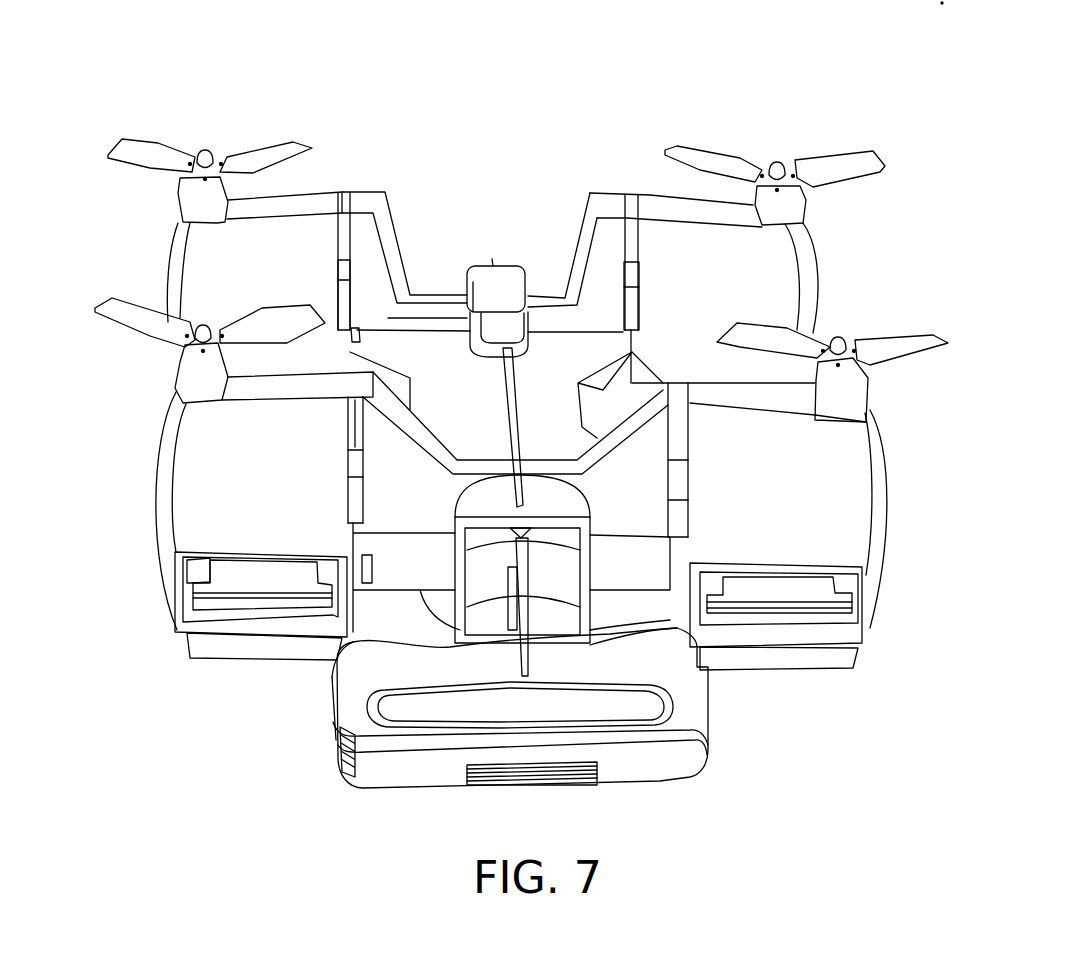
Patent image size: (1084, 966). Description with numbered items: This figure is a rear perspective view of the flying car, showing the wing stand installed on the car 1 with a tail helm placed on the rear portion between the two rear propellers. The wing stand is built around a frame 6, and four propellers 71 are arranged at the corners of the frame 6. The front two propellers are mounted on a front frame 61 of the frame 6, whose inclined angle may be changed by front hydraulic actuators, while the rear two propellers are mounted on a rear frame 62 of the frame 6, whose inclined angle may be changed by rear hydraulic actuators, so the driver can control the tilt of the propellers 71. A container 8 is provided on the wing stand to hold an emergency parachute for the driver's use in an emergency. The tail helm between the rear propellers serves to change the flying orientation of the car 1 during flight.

The car 1 is at (697, 682).
The frame 6 is at (496, 400).
The container 8 is at (507, 273).
The front frame 61 is at (363, 193).
The rear frame 62 is at (200, 455).
The propellers 71 is at (143, 145).